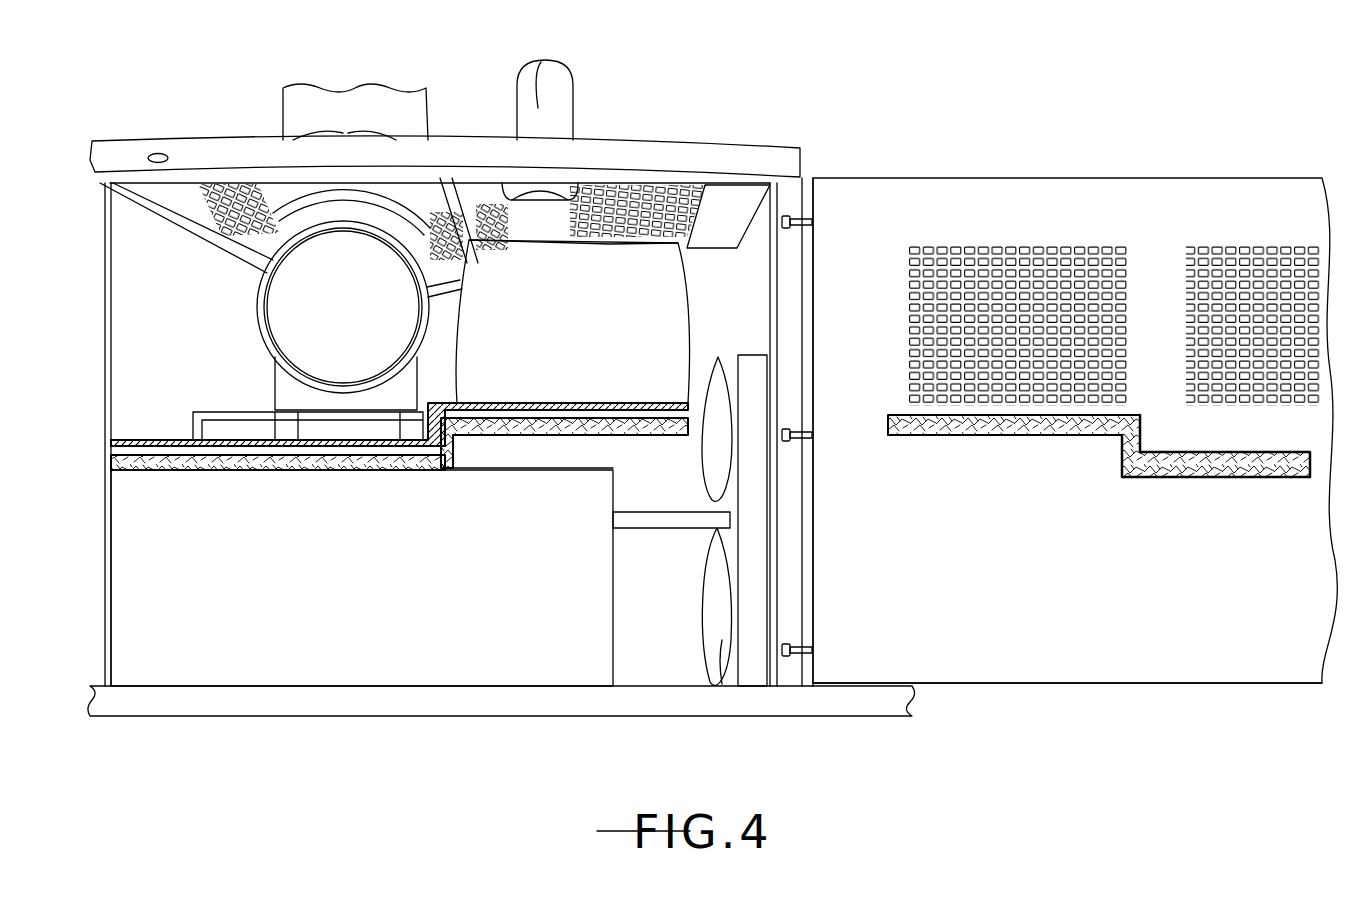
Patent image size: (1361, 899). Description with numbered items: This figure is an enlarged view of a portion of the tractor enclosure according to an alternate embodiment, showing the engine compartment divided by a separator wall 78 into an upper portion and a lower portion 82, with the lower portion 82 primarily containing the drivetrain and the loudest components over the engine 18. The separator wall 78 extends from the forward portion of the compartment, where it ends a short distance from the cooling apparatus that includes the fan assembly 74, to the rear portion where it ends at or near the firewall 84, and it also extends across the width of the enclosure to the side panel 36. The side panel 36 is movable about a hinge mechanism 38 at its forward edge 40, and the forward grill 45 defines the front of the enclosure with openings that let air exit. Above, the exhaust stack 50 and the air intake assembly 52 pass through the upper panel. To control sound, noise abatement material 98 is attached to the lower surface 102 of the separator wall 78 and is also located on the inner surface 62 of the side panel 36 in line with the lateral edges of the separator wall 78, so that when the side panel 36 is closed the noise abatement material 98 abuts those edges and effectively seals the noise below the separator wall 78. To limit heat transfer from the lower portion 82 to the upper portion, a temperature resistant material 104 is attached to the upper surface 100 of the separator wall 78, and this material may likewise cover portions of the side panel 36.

The engine 18 is at (352, 655).
The side panel 36 is at (882, 172).
The hinge mechanism 38 is at (812, 228).
The forward edge 40 is at (812, 655).
The forward grill 45 is at (805, 200).
The exhaust stack 50 is at (548, 60).
The air intake assembly 52 is at (355, 108).
The inner surface 62 is at (882, 586).
The fan assembly 74 is at (727, 655).
The separator wall 78 is at (621, 406).
The lower portion 82 is at (148, 583).
The firewall 84 is at (148, 360).
The noise abatement material 98 is at (580, 440).
The upper surface 100 is at (490, 402).
The lower surface 102 is at (520, 456).
The temperature resistant material 104 is at (222, 437).